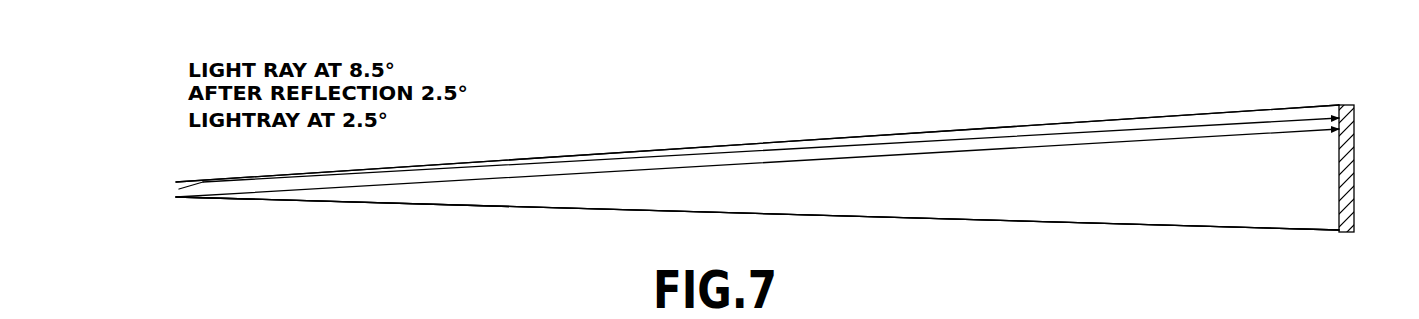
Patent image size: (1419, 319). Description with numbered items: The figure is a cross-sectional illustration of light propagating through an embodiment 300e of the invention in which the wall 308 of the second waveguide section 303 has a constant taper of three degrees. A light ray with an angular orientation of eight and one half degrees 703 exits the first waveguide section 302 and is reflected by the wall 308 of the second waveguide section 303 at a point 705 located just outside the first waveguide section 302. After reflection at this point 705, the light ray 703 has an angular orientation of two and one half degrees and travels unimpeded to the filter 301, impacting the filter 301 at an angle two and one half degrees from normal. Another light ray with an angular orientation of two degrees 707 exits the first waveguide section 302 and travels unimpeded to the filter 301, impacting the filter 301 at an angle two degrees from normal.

The filter 301 is at (1346, 105).
The first waveguide section 302 is at (197, 199).
The second waveguide section 303 is at (912, 194).
The embodiment 300e is at (1092, 225).
The wall 308 is at (770, 141).
The light ray with an angular orientation of 8.5 degrees 703 is at (190, 198).
The point 705 is at (210, 182).
The light ray with an angular orientation of two degrees 707 is at (502, 180).